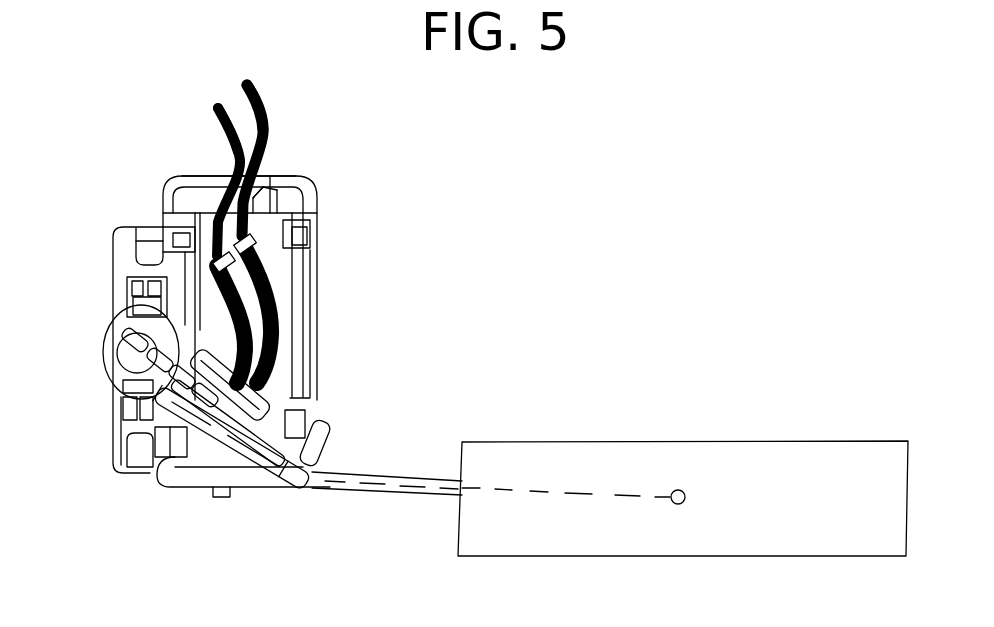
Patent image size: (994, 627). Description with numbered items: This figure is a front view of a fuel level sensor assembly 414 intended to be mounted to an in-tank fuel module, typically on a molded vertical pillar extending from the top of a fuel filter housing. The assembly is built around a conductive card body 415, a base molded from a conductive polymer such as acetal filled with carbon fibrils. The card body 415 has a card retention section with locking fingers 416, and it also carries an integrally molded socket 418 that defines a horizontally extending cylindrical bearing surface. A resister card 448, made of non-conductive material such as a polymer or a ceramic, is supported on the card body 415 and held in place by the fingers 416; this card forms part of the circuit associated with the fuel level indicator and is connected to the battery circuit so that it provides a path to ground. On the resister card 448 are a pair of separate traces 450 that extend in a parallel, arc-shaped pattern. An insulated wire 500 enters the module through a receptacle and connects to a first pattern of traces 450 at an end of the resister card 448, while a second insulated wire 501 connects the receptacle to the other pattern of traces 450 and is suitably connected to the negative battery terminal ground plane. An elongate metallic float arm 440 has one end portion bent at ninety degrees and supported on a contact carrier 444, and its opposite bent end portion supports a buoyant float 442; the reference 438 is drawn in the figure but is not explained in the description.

The fuel level sensor assembly 414 is at (323, 266).
The conductive card body 415 is at (288, 172).
The locking fingers 416 is at (310, 213).
The integrally molded socket 418 is at (100, 355).
The internal assembly 438 is at (318, 339).
The float arm 440 is at (370, 472).
The buoyant float 442 is at (688, 444).
The contact carrier 444 is at (255, 412).
The resister card 448 is at (275, 259).
The traces 450 is at (272, 293).
The insulated wire 500 is at (267, 121).
The second insulated wire 501 is at (228, 125).